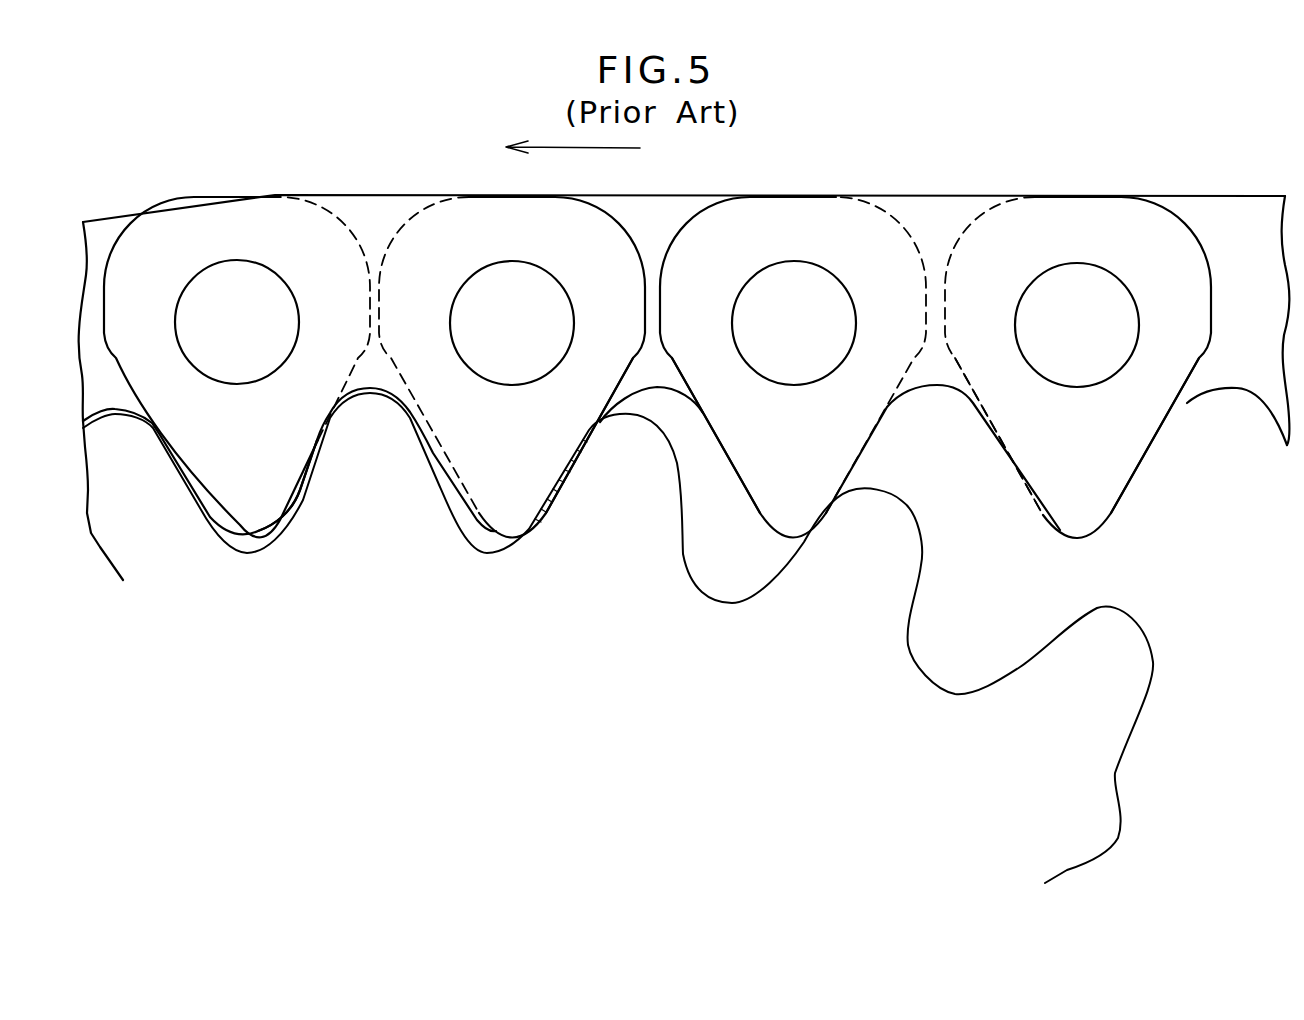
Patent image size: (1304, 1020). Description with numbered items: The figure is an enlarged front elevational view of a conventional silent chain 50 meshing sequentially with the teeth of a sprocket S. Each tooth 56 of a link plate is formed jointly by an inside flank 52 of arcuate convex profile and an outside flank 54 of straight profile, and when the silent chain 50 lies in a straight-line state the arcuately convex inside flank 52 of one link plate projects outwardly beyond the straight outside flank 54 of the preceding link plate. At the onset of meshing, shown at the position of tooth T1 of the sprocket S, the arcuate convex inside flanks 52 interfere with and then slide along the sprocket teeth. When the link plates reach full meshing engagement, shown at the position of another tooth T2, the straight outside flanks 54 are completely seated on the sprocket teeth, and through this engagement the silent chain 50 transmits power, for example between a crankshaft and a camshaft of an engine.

The silent chain 50 is at (893, 185).
The inside flank 52 is at (867, 447).
The outside flank 54 is at (300, 497).
The tooth 56 is at (753, 437).
The sprocket S is at (1154, 703).
The tooth T1 is at (890, 556).
The tooth T2 is at (392, 458).